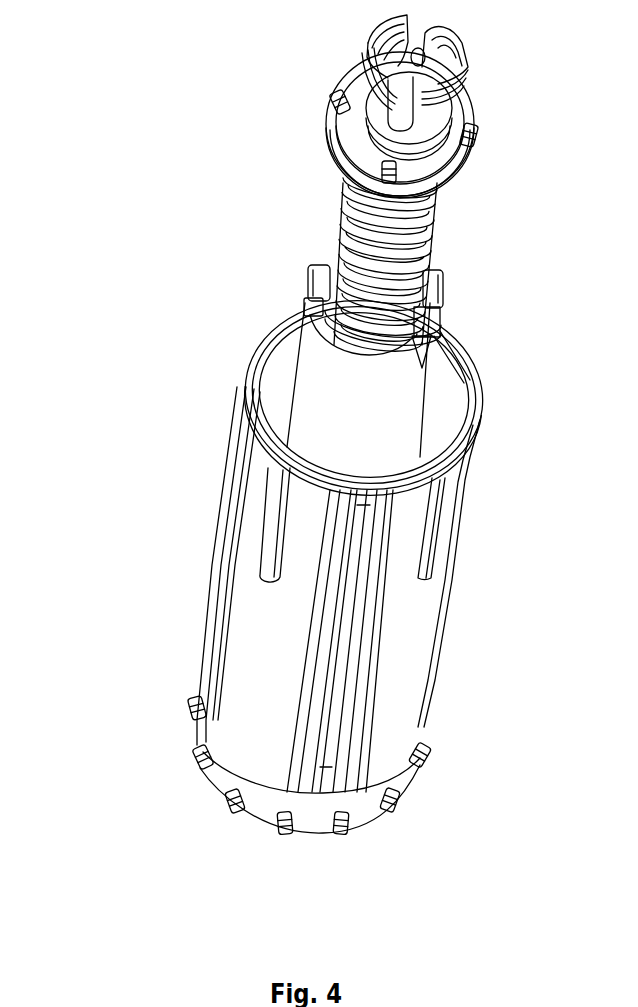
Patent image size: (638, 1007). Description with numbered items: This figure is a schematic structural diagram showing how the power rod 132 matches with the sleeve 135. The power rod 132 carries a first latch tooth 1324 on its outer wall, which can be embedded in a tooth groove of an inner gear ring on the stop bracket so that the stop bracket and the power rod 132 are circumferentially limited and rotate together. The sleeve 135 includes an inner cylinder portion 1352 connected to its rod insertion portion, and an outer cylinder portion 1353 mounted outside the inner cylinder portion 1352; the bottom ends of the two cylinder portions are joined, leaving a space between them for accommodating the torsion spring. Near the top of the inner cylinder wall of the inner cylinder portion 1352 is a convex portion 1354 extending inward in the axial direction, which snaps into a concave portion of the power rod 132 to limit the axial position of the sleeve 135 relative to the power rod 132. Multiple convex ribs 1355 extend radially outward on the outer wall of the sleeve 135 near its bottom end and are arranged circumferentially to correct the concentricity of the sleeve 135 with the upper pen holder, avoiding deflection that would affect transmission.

The power rod 132 is at (338, 246).
The first latch tooth 1324 is at (470, 133).
The sleeve 135 is at (74, 479).
The inner cylinder portion 1352 is at (312, 383).
The outer cylinder portion 1353 is at (253, 516).
The convex portion 1354 is at (442, 334).
The convex ribs 1355 is at (208, 768).